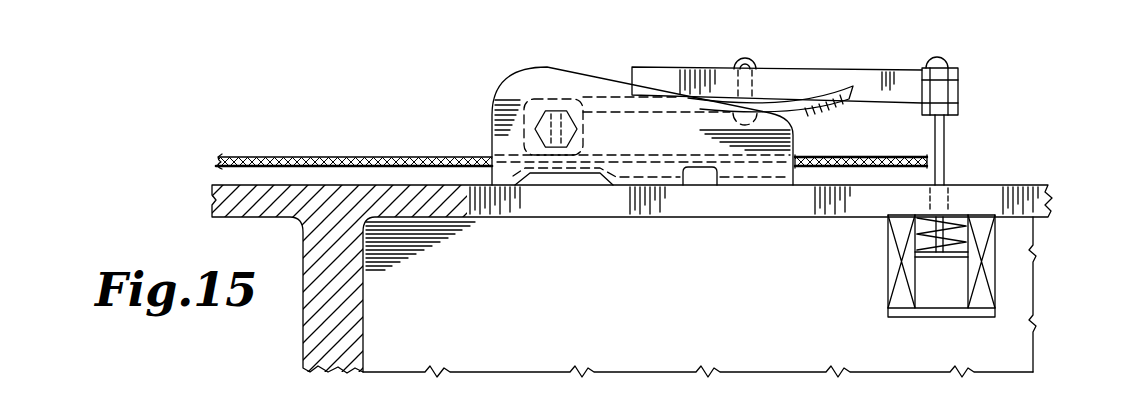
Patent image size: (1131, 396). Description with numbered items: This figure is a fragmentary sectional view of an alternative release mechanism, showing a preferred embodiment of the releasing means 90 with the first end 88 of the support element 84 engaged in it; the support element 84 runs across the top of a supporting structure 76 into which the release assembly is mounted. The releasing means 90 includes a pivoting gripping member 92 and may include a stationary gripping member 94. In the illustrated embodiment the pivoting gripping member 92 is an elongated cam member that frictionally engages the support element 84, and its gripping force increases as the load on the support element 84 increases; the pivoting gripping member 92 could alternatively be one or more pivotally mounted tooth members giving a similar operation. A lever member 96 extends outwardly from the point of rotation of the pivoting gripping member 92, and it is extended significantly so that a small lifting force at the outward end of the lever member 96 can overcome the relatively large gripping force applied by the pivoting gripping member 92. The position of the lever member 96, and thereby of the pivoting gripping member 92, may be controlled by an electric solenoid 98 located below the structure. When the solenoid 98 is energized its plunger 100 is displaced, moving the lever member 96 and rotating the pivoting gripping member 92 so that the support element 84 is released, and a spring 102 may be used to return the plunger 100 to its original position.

The support plate 76 is at (487, 205).
The support element 84 is at (331, 156).
The first end 88 is at (855, 167).
The releasing means 90 is at (523, 73).
The pivoting gripping member 92 is at (527, 137).
The stationary gripping member 94 is at (575, 174).
The lever member 96 is at (865, 90).
The electric solenoid 98 is at (886, 288).
The plunger 100 is at (930, 296).
The spring 102 is at (952, 236).